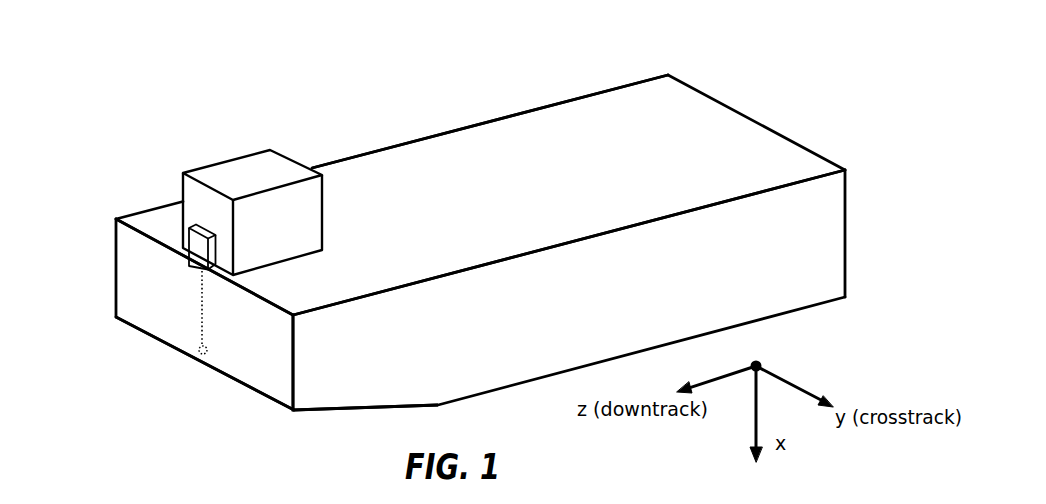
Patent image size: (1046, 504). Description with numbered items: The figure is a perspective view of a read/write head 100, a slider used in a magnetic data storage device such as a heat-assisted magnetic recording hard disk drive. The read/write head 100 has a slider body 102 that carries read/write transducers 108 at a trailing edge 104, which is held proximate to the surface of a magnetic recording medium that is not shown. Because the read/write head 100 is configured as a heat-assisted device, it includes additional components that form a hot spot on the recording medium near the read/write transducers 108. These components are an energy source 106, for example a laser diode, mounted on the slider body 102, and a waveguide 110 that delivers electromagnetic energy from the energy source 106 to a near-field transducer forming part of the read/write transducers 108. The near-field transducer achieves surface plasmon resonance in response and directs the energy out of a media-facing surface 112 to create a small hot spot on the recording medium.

The read/write head 100 is at (348, 72).
The slider body 102 is at (425, 152).
The trailing edge 104 is at (118, 293).
The energy source 106 is at (189, 228).
The read/write transducers 108 is at (196, 370).
The waveguide 110 is at (203, 308).
The media-facing surface 112 is at (282, 411).